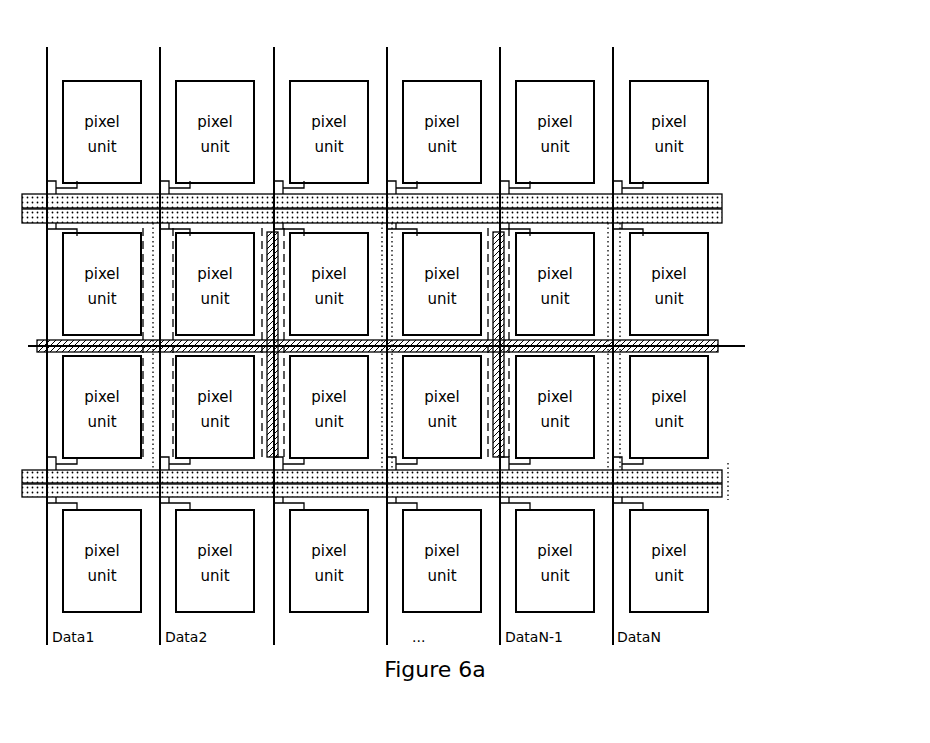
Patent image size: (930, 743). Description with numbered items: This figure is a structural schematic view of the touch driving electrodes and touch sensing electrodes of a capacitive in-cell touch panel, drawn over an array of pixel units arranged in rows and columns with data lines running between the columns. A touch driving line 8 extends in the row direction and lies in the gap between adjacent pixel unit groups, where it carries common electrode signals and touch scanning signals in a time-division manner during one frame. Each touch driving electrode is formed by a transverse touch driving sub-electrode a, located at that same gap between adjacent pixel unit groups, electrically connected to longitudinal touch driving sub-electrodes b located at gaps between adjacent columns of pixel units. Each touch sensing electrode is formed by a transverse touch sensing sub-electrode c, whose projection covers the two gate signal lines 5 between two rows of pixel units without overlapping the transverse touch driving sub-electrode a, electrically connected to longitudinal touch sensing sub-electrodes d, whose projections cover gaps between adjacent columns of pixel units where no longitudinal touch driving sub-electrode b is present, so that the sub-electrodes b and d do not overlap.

The gate signal lines 5 is at (790, 196).
The touch driving line 8 is at (739, 342).
The transverse touch driving sub-electrode a is at (720, 360).
The longitudinal touch driving sub-electrode b is at (272, 232).
The transverse touch sensing sub-electrode c is at (718, 505).
The longitudinal touch sensing sub-electrode d is at (145, 233).